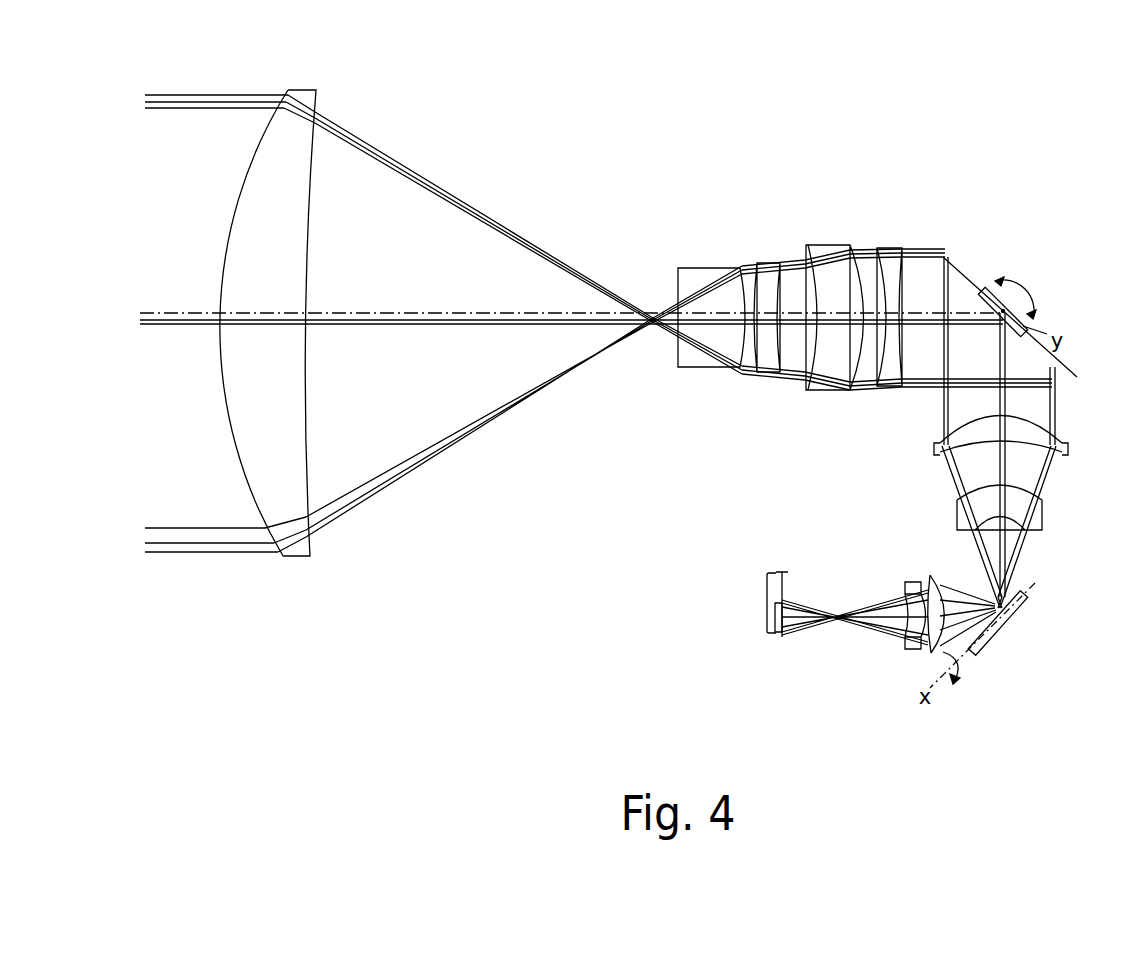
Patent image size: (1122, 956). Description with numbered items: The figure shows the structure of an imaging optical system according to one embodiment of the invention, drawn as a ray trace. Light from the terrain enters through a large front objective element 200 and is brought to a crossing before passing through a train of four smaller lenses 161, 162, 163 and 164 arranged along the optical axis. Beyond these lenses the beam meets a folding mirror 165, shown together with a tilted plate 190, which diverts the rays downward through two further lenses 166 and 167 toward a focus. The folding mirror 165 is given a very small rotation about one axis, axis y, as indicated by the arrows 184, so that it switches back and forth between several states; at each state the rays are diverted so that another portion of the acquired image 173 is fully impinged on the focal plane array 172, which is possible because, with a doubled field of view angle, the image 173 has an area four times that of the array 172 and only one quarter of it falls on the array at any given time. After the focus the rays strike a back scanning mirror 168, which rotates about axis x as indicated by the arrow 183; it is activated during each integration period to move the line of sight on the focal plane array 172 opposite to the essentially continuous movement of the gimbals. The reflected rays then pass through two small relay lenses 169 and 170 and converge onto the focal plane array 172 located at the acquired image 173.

The objective lens 200 is at (208, 222).
The first lens 161 is at (711, 268).
The second lens 162 is at (766, 263).
The third lens 163 is at (828, 245).
The fourth lens 164 is at (888, 248).
The tiltable mirror 190 is at (980, 290).
The arrows 184 is at (1030, 294).
The folding mirror 165 is at (1028, 326).
The lens 166 is at (940, 448).
The lens 167 is at (956, 517).
The back scanning mirror 168 is at (1028, 593).
The arrow 183 is at (962, 657).
The lens 169 is at (927, 645).
The lens 170 is at (903, 643).
The focal plane array 172 is at (774, 622).
The acquired image 173 is at (766, 602).